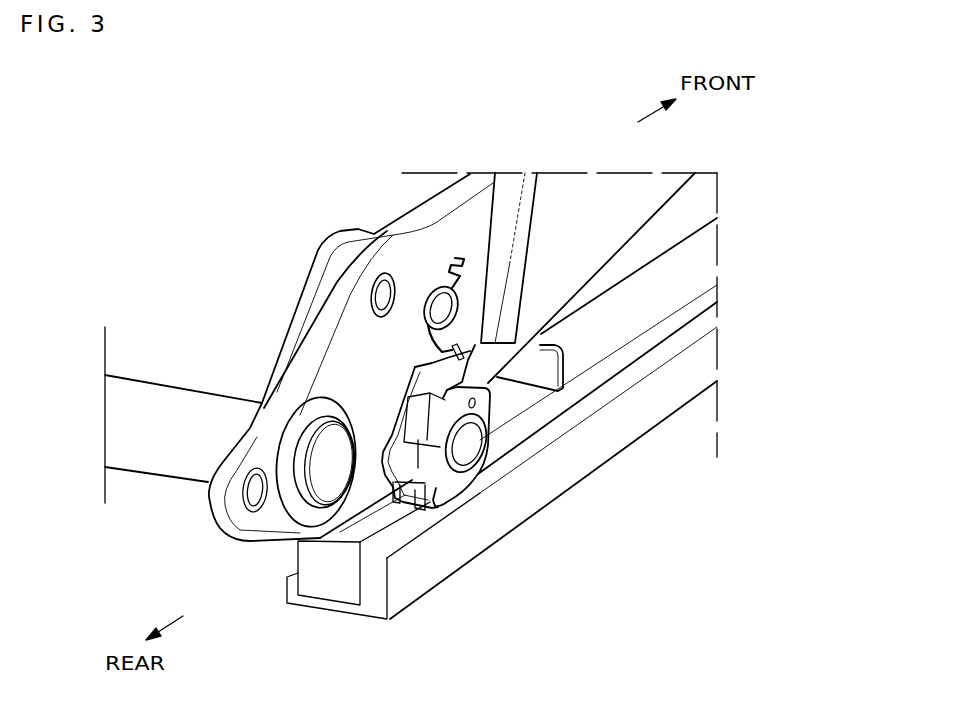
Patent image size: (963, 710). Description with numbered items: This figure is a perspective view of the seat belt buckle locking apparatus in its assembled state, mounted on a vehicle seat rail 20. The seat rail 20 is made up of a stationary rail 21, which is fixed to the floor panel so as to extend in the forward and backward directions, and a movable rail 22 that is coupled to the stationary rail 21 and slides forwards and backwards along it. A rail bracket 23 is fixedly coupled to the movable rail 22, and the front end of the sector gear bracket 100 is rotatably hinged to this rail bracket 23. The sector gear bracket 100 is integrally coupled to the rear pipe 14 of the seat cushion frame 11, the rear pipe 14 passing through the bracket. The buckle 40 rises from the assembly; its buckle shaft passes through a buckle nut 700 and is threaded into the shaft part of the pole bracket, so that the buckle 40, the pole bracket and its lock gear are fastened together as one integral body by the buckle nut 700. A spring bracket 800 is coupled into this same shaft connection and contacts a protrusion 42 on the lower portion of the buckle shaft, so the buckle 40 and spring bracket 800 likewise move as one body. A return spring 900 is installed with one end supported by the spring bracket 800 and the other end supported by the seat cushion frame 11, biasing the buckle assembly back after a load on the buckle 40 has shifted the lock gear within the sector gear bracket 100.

The seat cushion frame 11 is at (360, 330).
The rear pipe 14 is at (140, 405).
The seat rail 20 is at (818, 266).
The stationary rail 21 is at (695, 362).
The movable rail 22 is at (695, 262).
The rail bracket 23 is at (515, 398).
The buckle 40 is at (520, 183).
The protrusion 42 is at (412, 505).
The sector gear bracket 100 is at (300, 326).
The buckle nut 700 is at (438, 505).
The spring bracket 800 is at (437, 382).
The return spring 900 is at (432, 287).